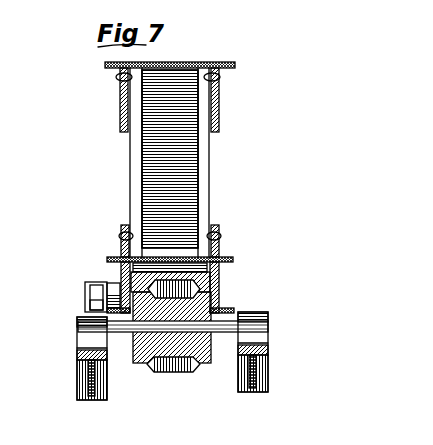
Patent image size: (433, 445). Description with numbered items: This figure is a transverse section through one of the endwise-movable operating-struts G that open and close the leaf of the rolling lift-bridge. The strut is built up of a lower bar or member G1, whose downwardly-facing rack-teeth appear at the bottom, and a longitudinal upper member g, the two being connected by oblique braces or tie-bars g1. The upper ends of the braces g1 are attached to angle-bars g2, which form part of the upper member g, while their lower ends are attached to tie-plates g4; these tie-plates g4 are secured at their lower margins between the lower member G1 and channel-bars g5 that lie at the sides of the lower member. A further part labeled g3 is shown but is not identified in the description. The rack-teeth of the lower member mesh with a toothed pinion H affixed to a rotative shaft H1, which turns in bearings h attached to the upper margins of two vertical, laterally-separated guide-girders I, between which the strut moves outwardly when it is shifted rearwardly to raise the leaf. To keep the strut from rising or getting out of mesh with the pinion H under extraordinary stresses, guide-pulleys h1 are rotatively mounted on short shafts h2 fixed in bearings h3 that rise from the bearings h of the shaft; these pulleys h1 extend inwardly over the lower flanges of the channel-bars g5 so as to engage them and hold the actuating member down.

The operating-strut G is at (174, 142).
The upper member g is at (205, 62).
The oblique braces g1 is at (252, 150).
The angle-bars g2 is at (253, 81).
The upper strip g3 is at (250, 108).
The tie-plates g4 is at (257, 218).
The channel-bars g5 is at (259, 248).
The lower member G1 is at (223, 277).
The bearings h is at (87, 338).
The guide-pulleys h1 is at (105, 283).
The short shafts h2 is at (88, 298).
The bearings h3 is at (102, 306).
The toothed pinion H is at (167, 371).
The rotative shaft H1 is at (230, 333).
The guide-girders I is at (92, 388).